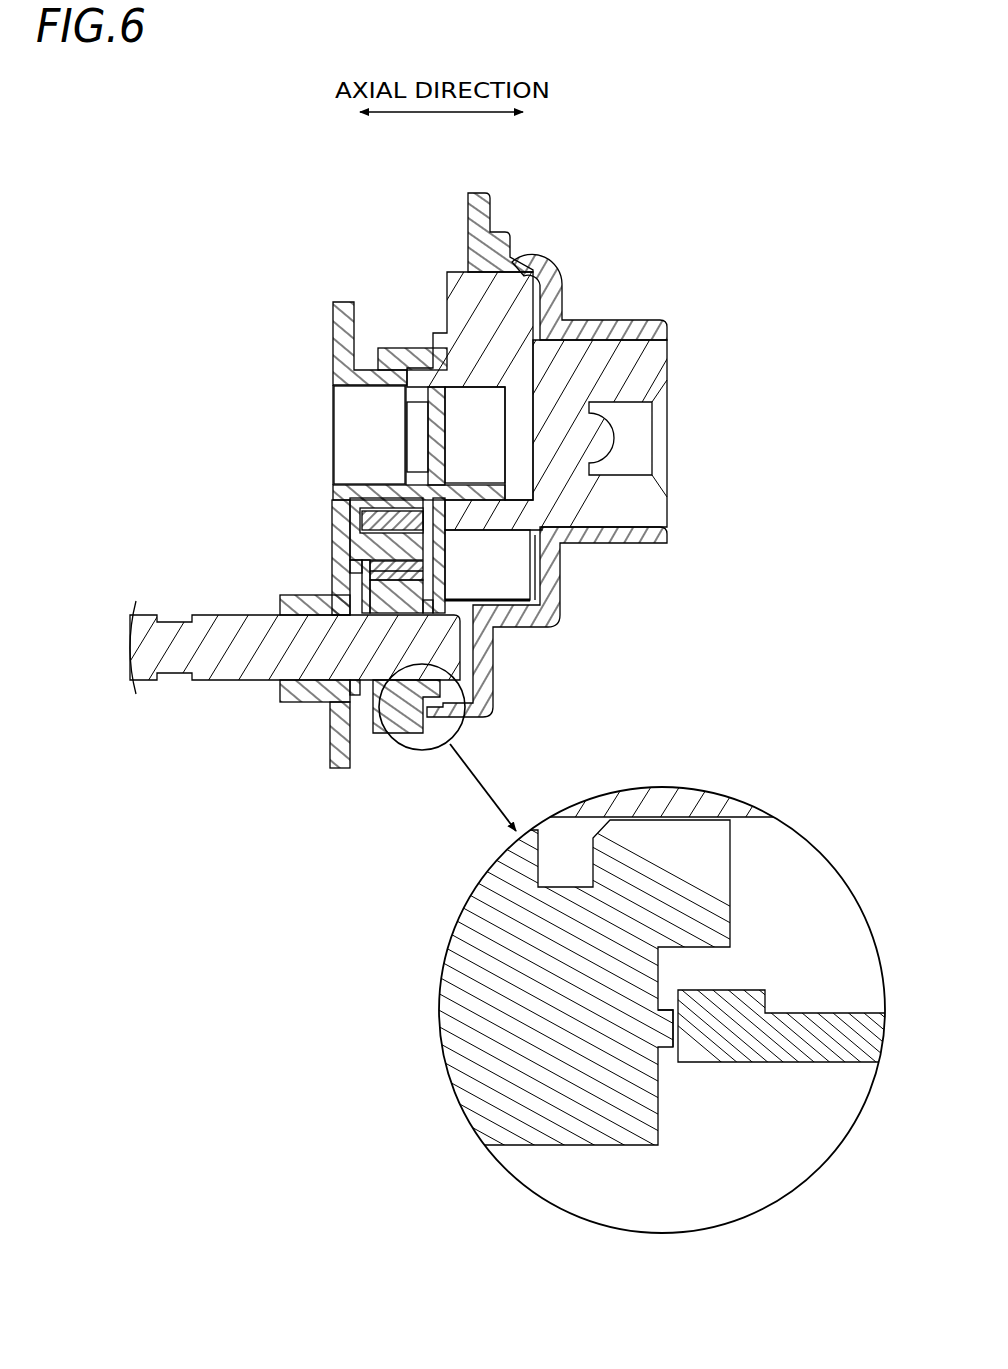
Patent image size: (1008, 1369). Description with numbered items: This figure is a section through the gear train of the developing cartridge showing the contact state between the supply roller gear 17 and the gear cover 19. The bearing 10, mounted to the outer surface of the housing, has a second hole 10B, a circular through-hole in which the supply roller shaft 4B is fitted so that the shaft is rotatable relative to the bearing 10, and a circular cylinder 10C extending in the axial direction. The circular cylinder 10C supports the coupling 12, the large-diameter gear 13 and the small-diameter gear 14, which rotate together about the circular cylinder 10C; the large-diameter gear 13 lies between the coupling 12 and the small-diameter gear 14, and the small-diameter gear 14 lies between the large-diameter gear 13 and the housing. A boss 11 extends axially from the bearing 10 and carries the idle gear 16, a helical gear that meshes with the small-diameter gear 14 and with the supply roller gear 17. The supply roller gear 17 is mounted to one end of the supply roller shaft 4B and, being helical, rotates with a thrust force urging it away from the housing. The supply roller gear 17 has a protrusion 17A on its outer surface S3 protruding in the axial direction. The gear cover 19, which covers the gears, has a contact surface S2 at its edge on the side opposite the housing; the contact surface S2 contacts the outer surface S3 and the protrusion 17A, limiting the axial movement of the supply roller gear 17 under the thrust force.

The bearing 10 is at (330, 330).
The second hole 10B is at (337, 680).
The circular cylinder 10C is at (367, 362).
The boss 11 is at (392, 533).
The coupling 12 is at (627, 358).
The large-diameter gear 13 is at (502, 283).
The small-diameter gear 14 is at (407, 345).
The idle gear 16 is at (358, 507).
The supply roller gear 17 is at (400, 730).
The protrusion 17A is at (667, 1013).
The gear cover 19 is at (555, 260).
The supply roller shaft 4B is at (213, 684).
The contact surface S2 is at (676, 1054).
The outer surface S3 is at (672, 1128).